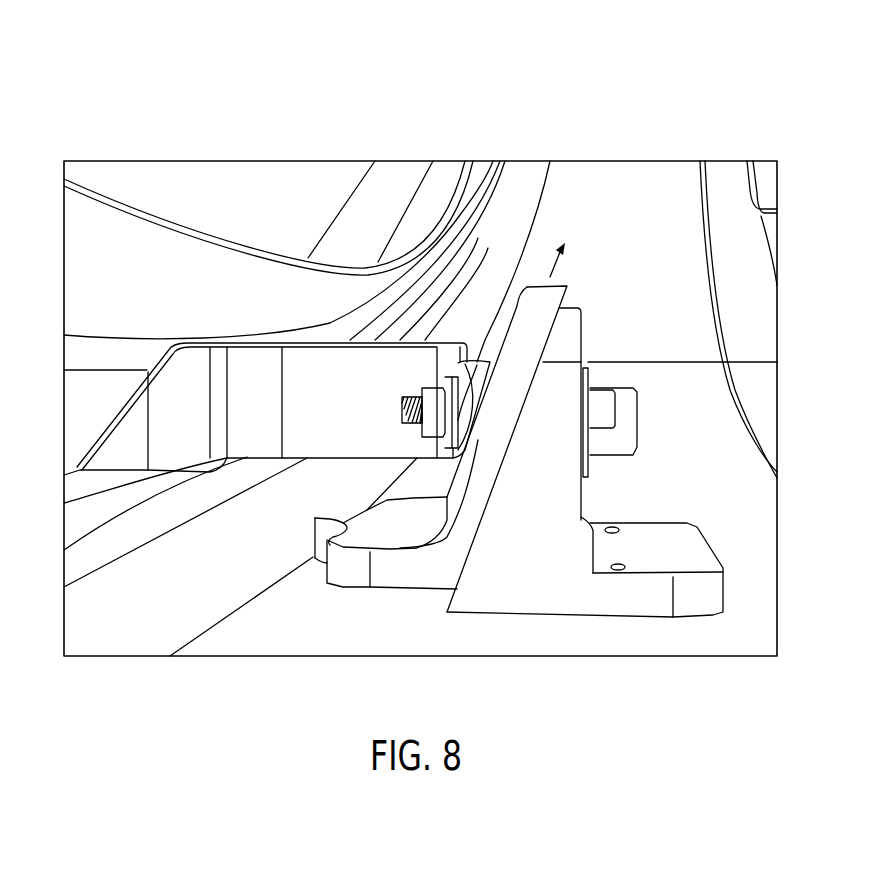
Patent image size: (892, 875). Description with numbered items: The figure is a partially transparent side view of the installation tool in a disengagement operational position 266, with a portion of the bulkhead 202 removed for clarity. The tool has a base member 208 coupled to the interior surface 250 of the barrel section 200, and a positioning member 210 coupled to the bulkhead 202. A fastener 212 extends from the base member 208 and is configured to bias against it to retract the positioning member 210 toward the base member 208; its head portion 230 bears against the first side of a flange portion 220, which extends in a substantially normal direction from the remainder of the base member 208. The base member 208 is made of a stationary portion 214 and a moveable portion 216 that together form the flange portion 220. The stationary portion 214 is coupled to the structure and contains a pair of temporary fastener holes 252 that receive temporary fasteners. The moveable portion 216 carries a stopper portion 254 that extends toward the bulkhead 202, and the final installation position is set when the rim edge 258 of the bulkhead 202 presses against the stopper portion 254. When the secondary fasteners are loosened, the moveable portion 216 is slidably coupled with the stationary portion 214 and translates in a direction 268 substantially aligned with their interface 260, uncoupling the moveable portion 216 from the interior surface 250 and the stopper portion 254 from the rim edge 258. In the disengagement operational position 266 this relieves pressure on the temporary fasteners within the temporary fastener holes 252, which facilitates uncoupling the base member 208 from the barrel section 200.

The barrel section 200 is at (669, 185).
The bulkhead 202 is at (83, 220).
The base member 208 is at (580, 205).
The positioning member 210 is at (248, 268).
The fastener 212 is at (631, 360).
The stationary portion 214 is at (638, 605).
The moveable portion 216 is at (402, 580).
The flange portion 220 is at (612, 262).
The head portion 230 is at (637, 447).
The interior surface 250 is at (503, 649).
The temporary fastener holes 252 is at (619, 567).
The stopper portion 254 is at (315, 526).
The rim edge 258 is at (217, 625).
The interface 260 is at (483, 520).
The disengagement operational position 266 is at (437, 132).
The direction 268 is at (566, 257).